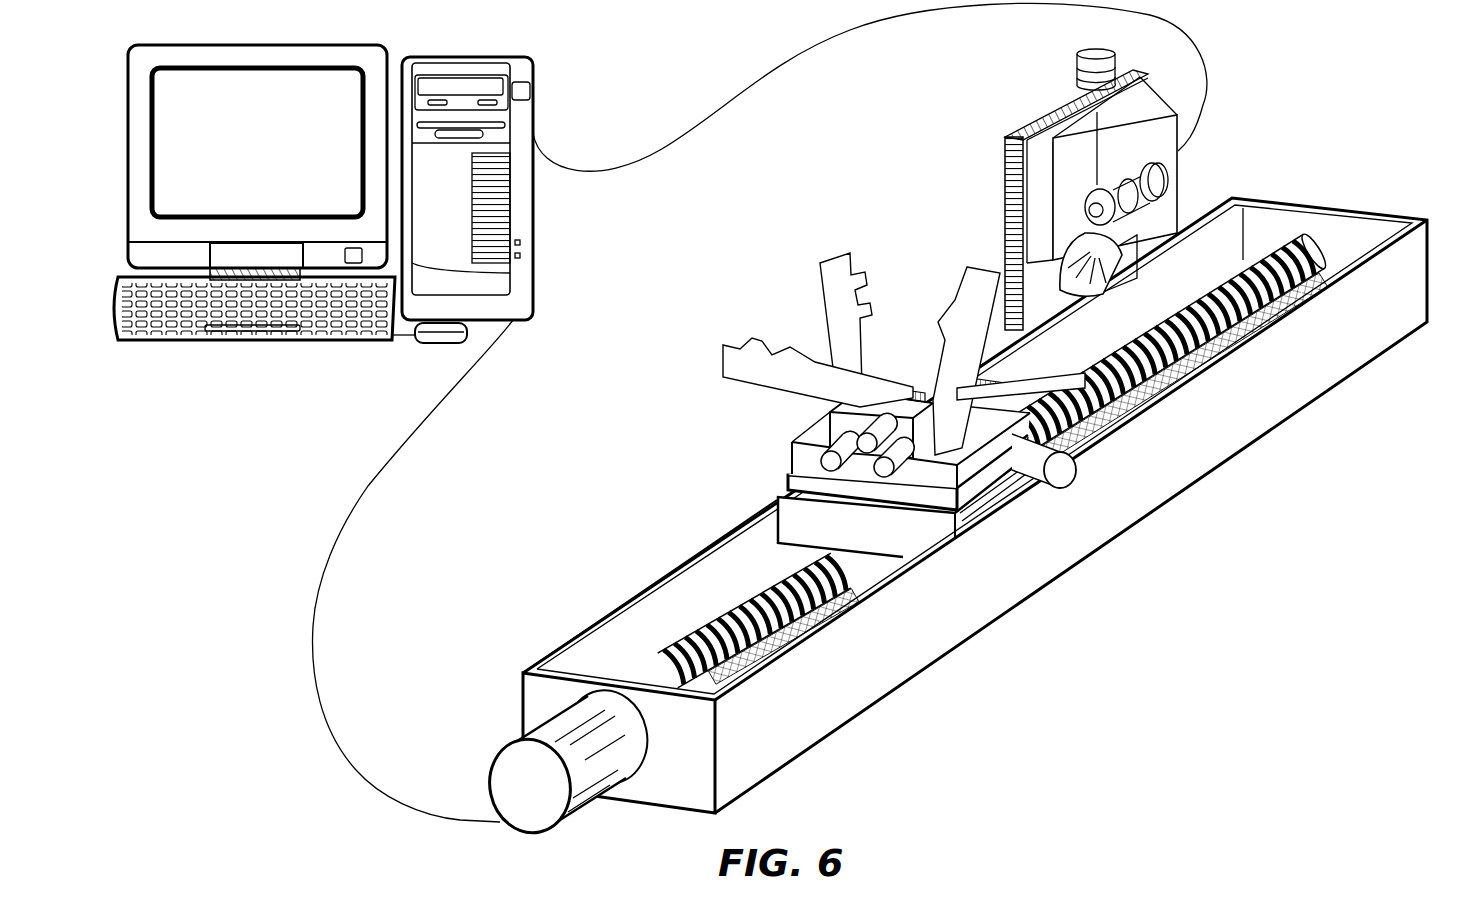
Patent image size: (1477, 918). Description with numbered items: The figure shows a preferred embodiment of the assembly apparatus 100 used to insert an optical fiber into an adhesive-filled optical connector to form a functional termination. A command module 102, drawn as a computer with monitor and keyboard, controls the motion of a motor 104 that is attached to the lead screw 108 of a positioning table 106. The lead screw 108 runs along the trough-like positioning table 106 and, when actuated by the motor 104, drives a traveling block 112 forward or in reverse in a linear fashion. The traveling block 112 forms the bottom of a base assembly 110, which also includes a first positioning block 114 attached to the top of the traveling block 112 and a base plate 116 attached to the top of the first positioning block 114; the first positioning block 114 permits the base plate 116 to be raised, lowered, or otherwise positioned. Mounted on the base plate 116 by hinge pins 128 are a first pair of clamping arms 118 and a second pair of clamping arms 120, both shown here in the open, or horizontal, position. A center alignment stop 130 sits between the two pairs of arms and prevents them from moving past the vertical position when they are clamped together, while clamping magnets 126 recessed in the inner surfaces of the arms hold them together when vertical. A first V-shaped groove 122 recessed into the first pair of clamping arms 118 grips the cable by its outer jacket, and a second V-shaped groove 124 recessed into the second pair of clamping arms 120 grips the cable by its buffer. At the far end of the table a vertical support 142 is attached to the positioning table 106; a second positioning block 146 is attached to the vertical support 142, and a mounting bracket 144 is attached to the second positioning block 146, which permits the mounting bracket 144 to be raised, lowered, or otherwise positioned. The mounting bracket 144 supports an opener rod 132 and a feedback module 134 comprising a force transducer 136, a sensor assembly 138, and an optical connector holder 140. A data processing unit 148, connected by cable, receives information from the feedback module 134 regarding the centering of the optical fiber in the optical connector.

The assembly apparatus 100 is at (893, 698).
The command module 102 is at (147, 342).
The motor 104 is at (500, 740).
The positioning table 106 is at (975, 640).
The lead screw 108 is at (672, 660).
The base assembly 110 is at (780, 496).
The traveling block 112 is at (776, 542).
The first positioning block 114 is at (953, 540).
The base plate 116 is at (990, 500).
The first pair of clamping arms 118 is at (830, 262).
The second pair of clamping arms 120 is at (1063, 489).
The first V-shaped groove 122 is at (900, 280).
The second V-shaped groove 124 is at (1100, 395).
The clamping magnets 126 is at (855, 258).
The hinge pins 128 is at (825, 460).
The center alignment stop 130 is at (850, 432).
The opener rod 132 is at (1242, 305).
The feedback module 134 is at (1128, 208).
The force transducer 136 is at (1125, 180).
The sensor assembly 138 is at (1157, 197).
The optical connector holder 140 is at (1173, 207).
The vertical support 142 is at (1010, 130).
The mounting bracket 144 is at (1083, 103).
The second positioning block 146 is at (1047, 112).
The data processing unit 148 is at (535, 112).